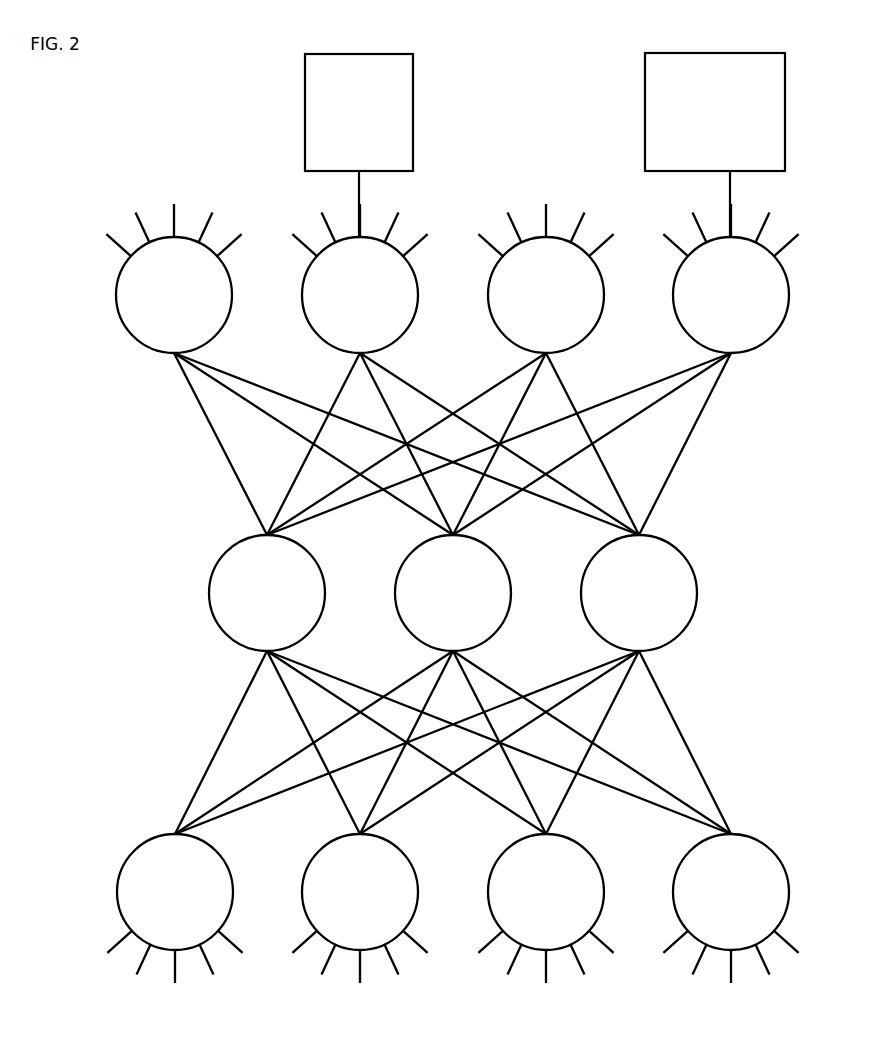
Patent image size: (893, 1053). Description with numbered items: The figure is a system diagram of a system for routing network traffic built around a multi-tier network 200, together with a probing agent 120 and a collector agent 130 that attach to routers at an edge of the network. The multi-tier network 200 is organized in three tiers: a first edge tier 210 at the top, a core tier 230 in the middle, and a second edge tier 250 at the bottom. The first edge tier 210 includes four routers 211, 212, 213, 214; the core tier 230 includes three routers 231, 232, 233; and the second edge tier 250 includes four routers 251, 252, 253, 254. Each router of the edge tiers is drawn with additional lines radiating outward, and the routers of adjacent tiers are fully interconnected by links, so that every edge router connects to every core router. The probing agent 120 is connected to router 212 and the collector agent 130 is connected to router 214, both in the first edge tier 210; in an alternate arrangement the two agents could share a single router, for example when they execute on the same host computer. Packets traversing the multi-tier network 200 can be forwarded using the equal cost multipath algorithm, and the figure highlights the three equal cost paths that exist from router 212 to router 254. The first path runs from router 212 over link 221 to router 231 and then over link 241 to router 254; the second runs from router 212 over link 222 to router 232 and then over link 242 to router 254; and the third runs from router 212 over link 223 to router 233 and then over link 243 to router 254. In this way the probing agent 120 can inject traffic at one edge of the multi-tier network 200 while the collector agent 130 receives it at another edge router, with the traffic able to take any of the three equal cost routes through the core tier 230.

The probing agent 120 is at (359, 145).
The collector agent 130 is at (715, 145).
The multi-tier network 200 is at (409, 593).
The first edge tier 210 is at (409, 278).
The router 211 is at (173, 278).
The router 212 is at (359, 278).
The router 213 is at (545, 278).
The router 214 is at (730, 278).
The link 221 is at (338, 395).
The link 222 is at (393, 420).
The link 223 is at (413, 386).
The core tier 230 is at (397, 593).
The router 231 is at (267, 593).
The router 232 is at (453, 593).
The router 233 is at (639, 593).
The link 241 is at (310, 667).
The link 242 is at (490, 674).
The link 243 is at (660, 692).
The second edge tier 250 is at (410, 908).
The router 251 is at (174, 908).
The router 252 is at (359, 908).
The router 253 is at (545, 908).
The router 254 is at (730, 908).